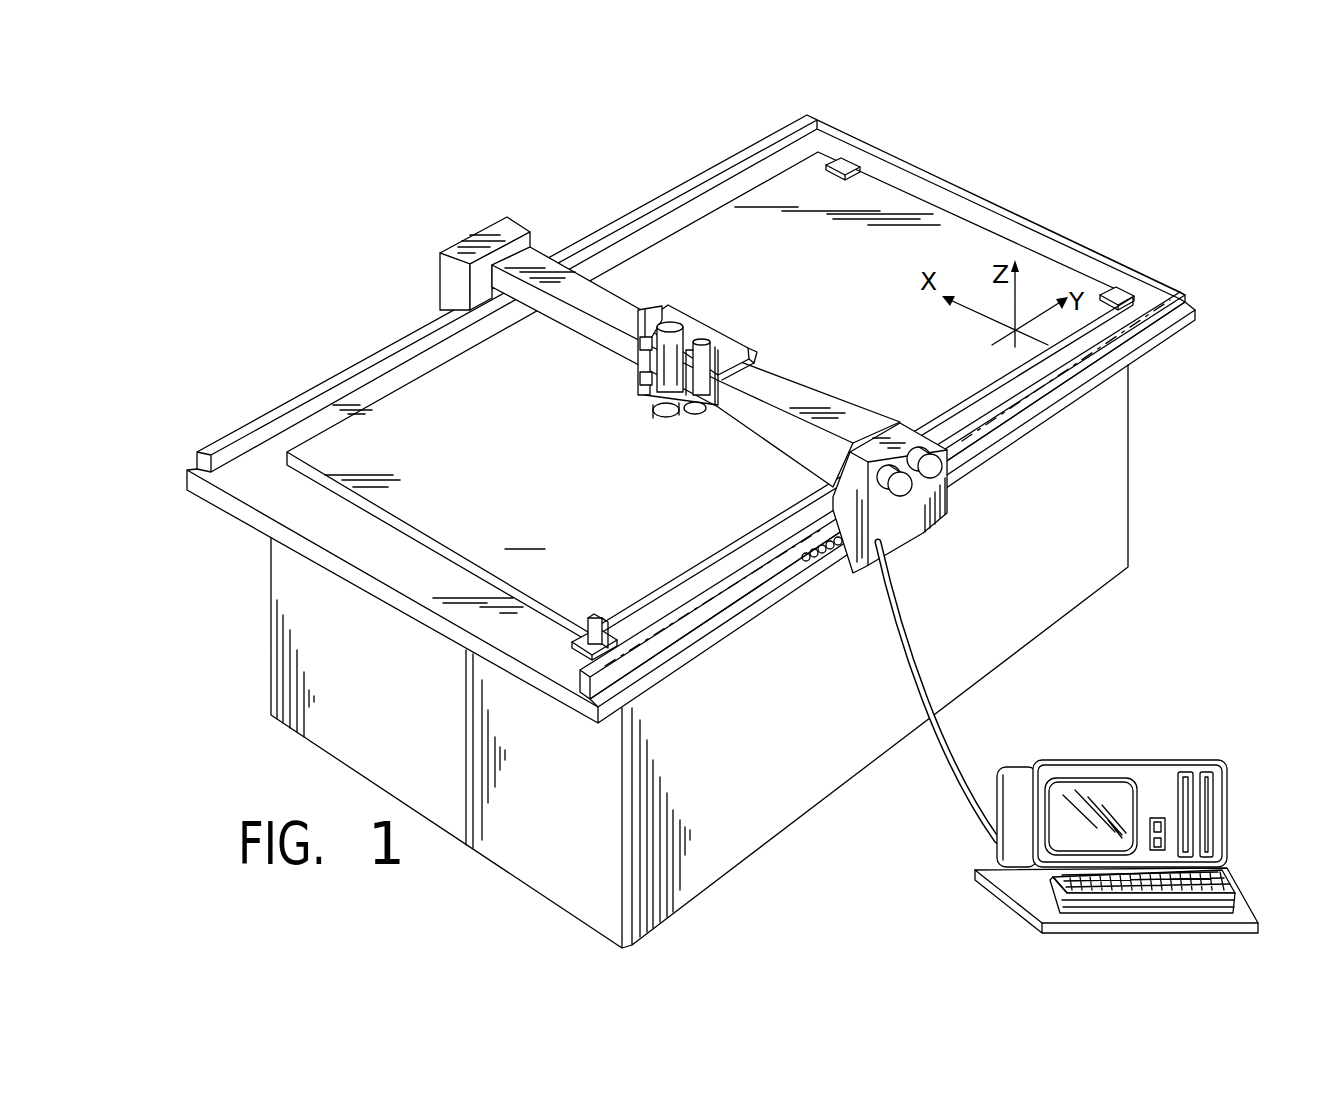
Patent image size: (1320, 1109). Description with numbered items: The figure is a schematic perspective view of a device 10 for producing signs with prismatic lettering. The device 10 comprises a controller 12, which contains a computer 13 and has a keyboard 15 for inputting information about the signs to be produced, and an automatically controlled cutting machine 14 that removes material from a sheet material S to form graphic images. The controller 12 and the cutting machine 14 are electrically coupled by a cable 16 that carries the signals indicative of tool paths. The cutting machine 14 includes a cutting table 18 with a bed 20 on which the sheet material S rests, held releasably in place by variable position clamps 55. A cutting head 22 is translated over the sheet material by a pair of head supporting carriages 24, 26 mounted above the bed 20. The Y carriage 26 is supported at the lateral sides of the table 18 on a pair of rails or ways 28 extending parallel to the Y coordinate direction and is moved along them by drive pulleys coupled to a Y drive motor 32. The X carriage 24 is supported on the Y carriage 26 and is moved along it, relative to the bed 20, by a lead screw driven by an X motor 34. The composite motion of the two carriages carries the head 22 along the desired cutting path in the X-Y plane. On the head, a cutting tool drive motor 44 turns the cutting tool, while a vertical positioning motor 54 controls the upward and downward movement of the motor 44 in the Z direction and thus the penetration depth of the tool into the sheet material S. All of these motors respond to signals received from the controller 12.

The device 10 is at (1041, 162).
The controller 12 is at (1138, 744).
The computer 13 is at (1230, 856).
The cutting machine 14 is at (982, 188).
The keyboard 15 is at (1103, 893).
The cable 16 is at (905, 624).
The cutting table 18 is at (302, 580).
The bed 20 is at (418, 565).
The cutting head 22 is at (663, 442).
The X carriage 24 is at (730, 347).
The Y carriage 26 is at (587, 297).
The rails or ways 28 is at (272, 420).
The Y drive motor 32 is at (918, 485).
The X motor 34 is at (946, 477).
The cutting tool drive motor 44 is at (669, 322).
The vertical positioning motor 54 is at (703, 338).
The variable position clamps 55 is at (838, 162).